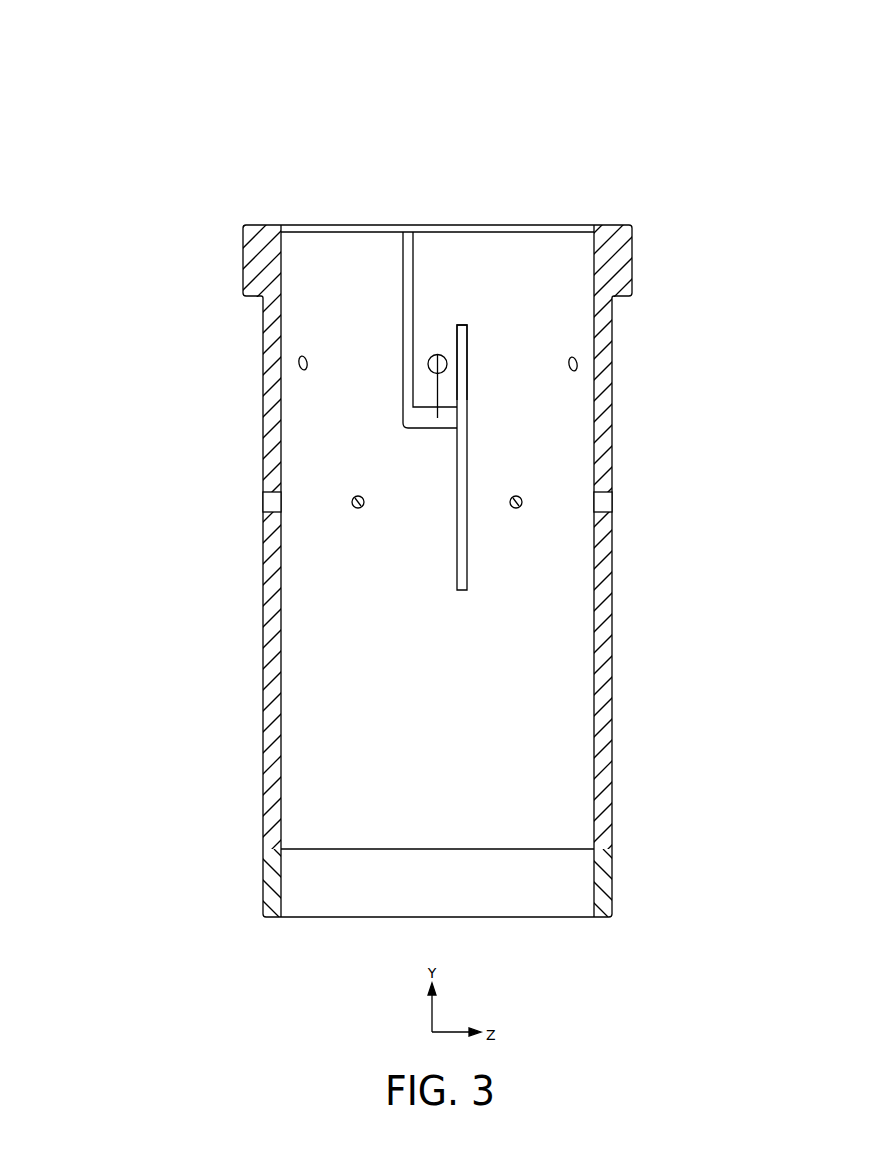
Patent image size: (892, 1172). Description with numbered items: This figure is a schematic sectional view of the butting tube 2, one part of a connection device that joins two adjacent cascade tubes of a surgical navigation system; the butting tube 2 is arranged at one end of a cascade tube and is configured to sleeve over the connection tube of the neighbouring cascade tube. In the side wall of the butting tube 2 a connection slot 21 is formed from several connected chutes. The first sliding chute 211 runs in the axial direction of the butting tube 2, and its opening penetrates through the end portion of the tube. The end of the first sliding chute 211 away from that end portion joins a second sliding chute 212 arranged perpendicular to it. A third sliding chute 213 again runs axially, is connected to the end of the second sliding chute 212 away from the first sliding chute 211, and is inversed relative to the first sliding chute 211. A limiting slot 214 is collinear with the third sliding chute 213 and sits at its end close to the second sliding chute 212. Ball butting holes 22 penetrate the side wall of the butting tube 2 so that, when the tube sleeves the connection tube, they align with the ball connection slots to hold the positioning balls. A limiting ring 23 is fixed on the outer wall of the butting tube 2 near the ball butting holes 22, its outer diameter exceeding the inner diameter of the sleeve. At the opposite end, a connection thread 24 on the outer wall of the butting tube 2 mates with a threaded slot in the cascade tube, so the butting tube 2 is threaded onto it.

The butting tube 2 is at (520, 688).
The connection slot 21 is at (728, 90).
The first sliding chute 211 is at (403, 322).
The second sliding chute 212 is at (440, 353).
The third sliding chute 213 is at (465, 488).
The limiting slot 214 is at (464, 362).
The ball butting hole 22 is at (355, 500).
The limiting ring 23 is at (253, 255).
The connection thread 24 is at (610, 812).